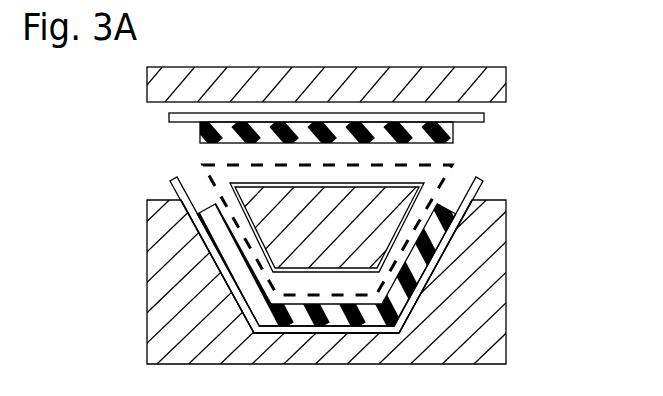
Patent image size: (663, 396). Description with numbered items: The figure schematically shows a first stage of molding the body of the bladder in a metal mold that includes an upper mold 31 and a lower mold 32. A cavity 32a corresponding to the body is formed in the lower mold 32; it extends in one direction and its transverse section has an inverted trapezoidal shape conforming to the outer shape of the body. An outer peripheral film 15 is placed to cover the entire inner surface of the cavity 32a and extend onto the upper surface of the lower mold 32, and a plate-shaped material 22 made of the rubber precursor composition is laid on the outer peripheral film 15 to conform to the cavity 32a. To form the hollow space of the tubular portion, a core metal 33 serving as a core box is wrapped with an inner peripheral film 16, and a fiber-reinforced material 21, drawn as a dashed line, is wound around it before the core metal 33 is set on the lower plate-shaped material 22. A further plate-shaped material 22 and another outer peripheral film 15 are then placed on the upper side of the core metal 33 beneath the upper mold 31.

The outer peripheral film 15 is at (169, 119).
The inner peripheral film 16 is at (228, 182).
The fiber-reinforced material 21 is at (453, 168).
The plate-shaped material 22 is at (453, 131).
The upper mold 31 is at (506, 83).
The lower mold 32 is at (497, 338).
The cavity 32a is at (208, 208).
The core metal 33 is at (387, 238).